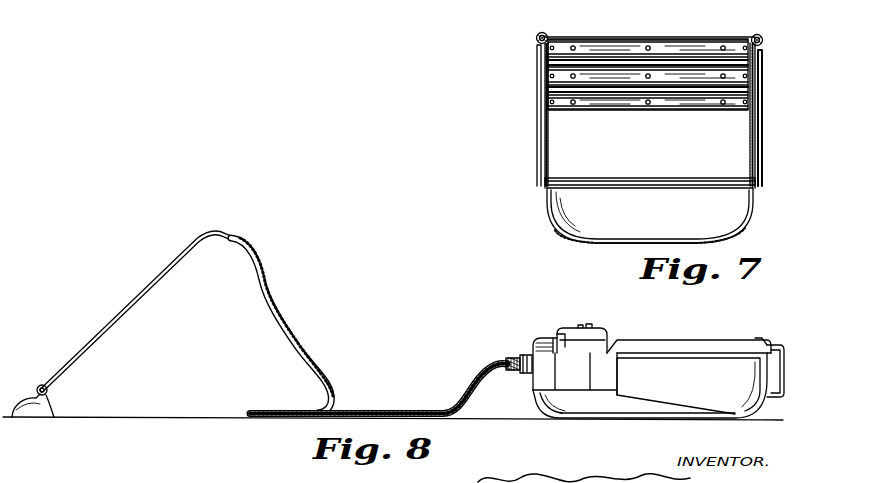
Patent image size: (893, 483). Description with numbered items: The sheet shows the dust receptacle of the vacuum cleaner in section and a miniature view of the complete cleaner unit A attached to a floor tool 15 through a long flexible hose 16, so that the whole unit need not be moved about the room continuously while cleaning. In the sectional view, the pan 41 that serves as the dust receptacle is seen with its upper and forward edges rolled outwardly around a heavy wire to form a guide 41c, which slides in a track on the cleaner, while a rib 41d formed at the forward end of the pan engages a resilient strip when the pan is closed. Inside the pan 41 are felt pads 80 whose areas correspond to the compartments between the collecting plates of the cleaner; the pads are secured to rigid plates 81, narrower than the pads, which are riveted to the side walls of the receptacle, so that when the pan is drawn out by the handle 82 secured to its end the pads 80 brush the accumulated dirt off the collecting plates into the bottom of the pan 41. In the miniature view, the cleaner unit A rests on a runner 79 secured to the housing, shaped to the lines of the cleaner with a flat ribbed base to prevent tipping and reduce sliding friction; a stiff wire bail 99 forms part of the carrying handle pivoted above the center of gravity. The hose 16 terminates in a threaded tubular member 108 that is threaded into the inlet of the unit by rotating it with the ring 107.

In FIG. 8, the floor tool 15 is at (212, 234).
In FIG. 8, the flexible hose 16 is at (296, 341).
In FIG. 7, the pan 41 is at (597, 243).
In FIG. 8, the pan 41 is at (702, 390).
In FIG. 7, the guide 41c is at (539, 36).
In FIG. 7, the rib 41d is at (537, 124).
In FIG. 8, the runner 79 is at (560, 402).
In FIG. 7, the pads 80 is at (618, 97).
In FIG. 7, the rigid plates 81 is at (673, 73).
In FIG. 8, the handle 82 is at (778, 354).
In FIG. 8, the wire bail 99 is at (590, 330).
In FIG. 8, the ring 107 is at (525, 374).
In FIG. 8, the threaded tubular member 108 is at (512, 357).
In FIG. 8, the vacuum cleaner unit A is at (667, 377).